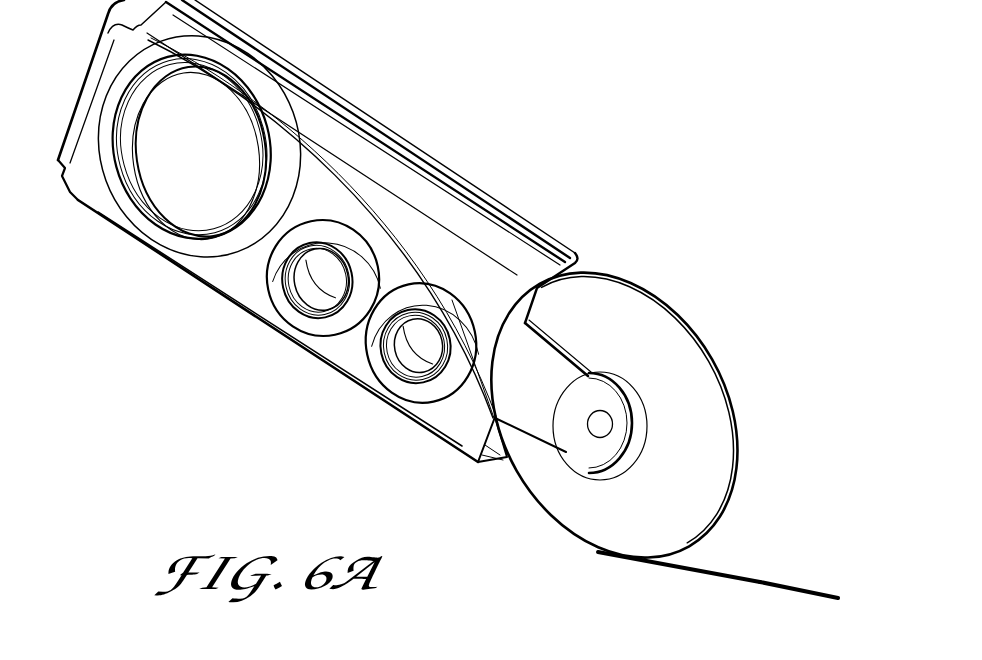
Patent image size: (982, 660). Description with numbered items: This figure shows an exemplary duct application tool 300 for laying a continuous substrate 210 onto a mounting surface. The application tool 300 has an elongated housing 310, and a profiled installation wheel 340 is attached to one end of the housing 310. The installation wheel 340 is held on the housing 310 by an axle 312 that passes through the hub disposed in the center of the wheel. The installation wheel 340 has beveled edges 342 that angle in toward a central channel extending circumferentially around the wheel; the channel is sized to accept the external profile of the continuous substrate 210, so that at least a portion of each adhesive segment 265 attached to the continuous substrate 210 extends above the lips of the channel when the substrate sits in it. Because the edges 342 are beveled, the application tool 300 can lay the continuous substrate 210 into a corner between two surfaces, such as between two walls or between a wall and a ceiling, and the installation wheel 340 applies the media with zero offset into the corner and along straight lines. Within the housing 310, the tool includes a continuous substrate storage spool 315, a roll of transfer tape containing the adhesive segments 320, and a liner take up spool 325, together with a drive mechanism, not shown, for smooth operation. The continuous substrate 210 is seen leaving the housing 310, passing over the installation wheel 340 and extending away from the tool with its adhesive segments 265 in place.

The application tool 300 is at (532, 62).
The housing 310 is at (458, 172).
The continuous substrate storage spool 315 is at (150, 220).
The liner take up spool 325 is at (288, 308).
The roll of transfer tape containing the adhesive segments 320 is at (383, 370).
The continuous substrate 210 is at (337, 175).
The adhesive segment 265 is at (787, 588).
The installation wheel 340 is at (710, 392).
The beveled edges 342 is at (637, 303).
The axle 312 is at (603, 423).